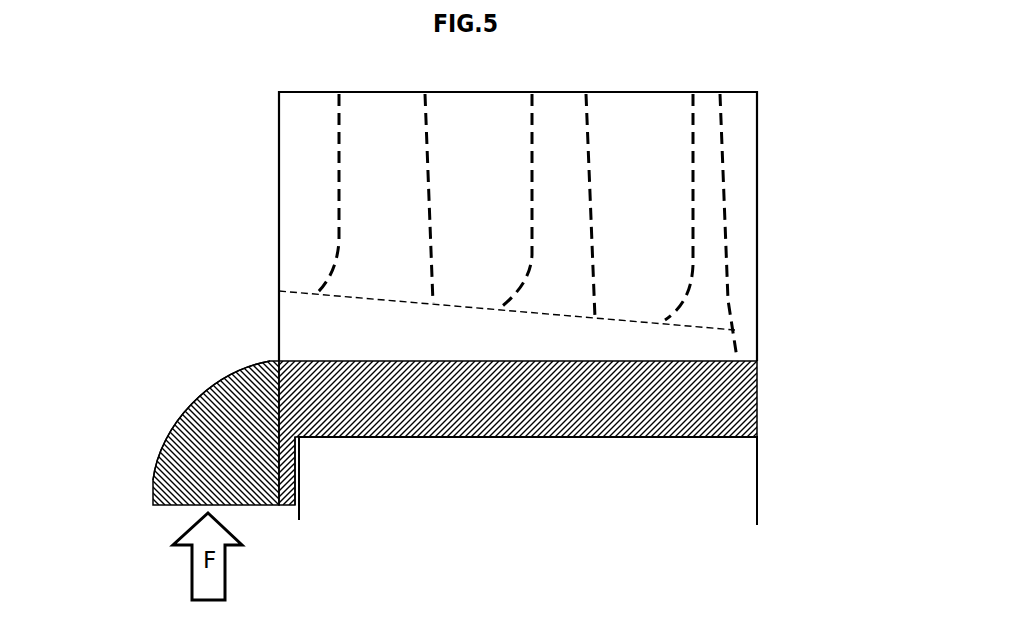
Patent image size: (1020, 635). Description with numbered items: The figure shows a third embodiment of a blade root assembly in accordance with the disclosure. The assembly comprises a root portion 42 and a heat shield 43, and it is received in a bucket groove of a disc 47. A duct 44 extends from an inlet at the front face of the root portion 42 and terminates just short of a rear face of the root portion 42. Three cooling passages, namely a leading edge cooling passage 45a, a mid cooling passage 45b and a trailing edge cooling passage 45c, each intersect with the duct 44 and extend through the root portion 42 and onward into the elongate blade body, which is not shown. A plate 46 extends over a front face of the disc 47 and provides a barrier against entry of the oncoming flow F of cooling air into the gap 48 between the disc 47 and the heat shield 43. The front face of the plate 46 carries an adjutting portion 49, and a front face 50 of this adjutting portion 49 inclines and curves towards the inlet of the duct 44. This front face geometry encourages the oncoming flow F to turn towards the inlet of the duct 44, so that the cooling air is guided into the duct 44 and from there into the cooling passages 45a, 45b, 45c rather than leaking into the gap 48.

The root portion 42 is at (742, 182).
The heat shield 43 is at (737, 388).
The duct 44 is at (296, 320).
The leading edge cooling passage 45a is at (353, 198).
The mid cooling passage 45b is at (552, 253).
The trailing edge cooling passage 45c is at (695, 283).
The plate 46 is at (288, 492).
The disc 47 is at (718, 470).
The gap 48 is at (500, 440).
The adjutting portion 49 is at (207, 463).
The front face 50 is at (205, 398).